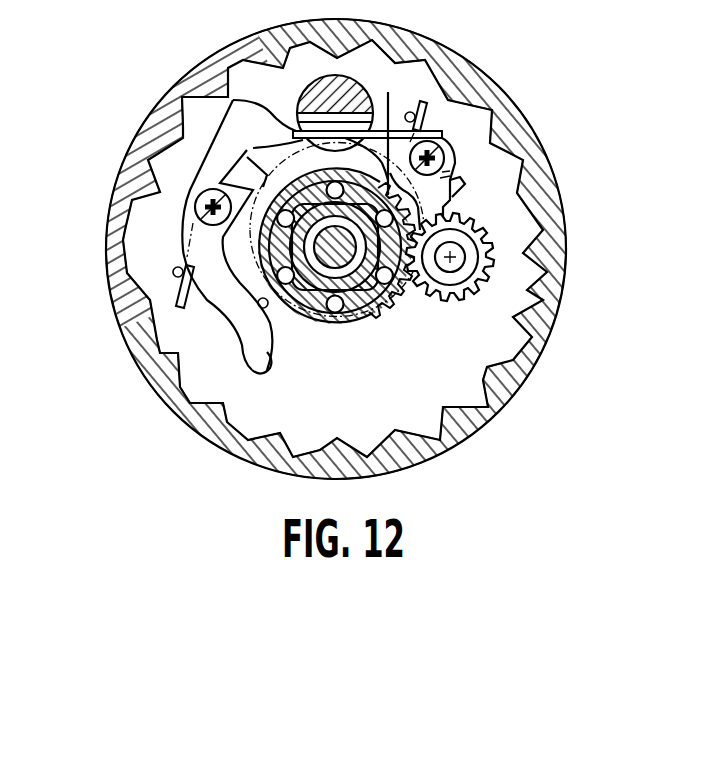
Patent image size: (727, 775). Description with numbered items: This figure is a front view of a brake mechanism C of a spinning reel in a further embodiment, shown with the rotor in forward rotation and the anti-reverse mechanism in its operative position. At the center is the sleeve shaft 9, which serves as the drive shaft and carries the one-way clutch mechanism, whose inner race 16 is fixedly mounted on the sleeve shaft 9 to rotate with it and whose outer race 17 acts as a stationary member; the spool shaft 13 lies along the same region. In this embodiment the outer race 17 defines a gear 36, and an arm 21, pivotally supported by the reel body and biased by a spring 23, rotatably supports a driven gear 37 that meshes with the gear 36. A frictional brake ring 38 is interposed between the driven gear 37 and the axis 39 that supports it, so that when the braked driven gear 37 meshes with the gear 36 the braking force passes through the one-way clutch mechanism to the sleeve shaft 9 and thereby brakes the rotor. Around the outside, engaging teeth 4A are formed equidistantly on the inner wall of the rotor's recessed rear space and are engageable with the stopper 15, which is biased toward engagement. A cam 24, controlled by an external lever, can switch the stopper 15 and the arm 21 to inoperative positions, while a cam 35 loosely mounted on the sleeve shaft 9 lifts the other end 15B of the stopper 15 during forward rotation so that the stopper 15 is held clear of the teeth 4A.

The engaging teeth 4A is at (420, 62).
The cam 24 is at (317, 92).
The stopper 15 is at (232, 132).
The other end of the stopper 15B is at (250, 372).
The inner race 16 is at (293, 253).
The spool shaft 13 is at (337, 253).
The cam 35 is at (292, 338).
The outer race 17 is at (365, 290).
The sleeve shaft 9 is at (360, 285).
The gear 36 is at (388, 95).
The arm 21 is at (448, 141).
The spring 23 is at (463, 183).
The driven gear 37 is at (493, 252).
The frictional brake ring 38 is at (470, 270).
The pinion axle 39 is at (458, 268).
The brake mechanism C is at (416, 298).